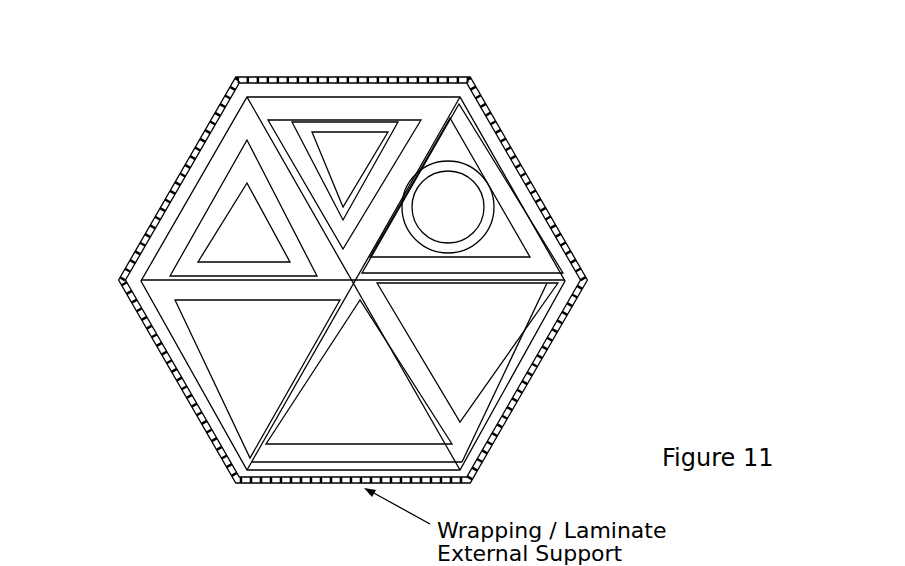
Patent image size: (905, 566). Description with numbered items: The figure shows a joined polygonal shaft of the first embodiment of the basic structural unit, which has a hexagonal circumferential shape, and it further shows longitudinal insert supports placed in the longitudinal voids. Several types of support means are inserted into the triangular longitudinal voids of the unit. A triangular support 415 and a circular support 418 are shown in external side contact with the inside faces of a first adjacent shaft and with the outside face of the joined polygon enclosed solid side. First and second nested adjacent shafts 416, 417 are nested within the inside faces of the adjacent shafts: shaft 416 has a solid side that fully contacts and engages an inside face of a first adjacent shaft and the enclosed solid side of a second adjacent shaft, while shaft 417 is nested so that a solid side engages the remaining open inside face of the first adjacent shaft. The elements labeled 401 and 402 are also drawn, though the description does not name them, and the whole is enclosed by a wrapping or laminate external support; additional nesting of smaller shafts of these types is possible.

The hexagonal housing 401 is at (196, 182).
The triangular cell wall 402 is at (342, 101).
The triangular support 415 is at (198, 243).
The first nested adjacent shaft 416 is at (404, 128).
The second nested adjacent shaft 417 is at (364, 124).
The circular support 418 is at (468, 168).